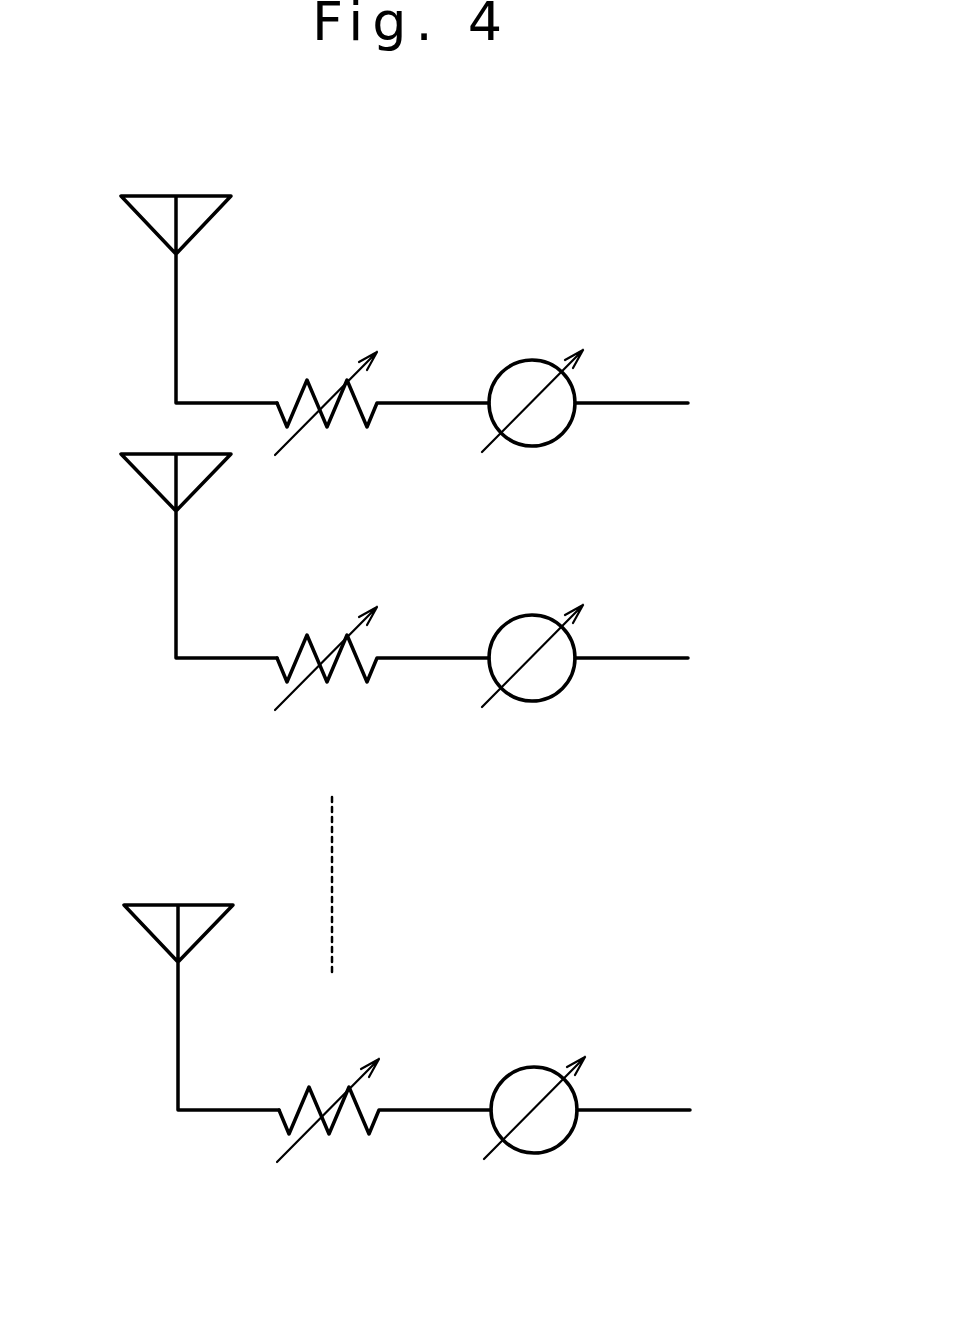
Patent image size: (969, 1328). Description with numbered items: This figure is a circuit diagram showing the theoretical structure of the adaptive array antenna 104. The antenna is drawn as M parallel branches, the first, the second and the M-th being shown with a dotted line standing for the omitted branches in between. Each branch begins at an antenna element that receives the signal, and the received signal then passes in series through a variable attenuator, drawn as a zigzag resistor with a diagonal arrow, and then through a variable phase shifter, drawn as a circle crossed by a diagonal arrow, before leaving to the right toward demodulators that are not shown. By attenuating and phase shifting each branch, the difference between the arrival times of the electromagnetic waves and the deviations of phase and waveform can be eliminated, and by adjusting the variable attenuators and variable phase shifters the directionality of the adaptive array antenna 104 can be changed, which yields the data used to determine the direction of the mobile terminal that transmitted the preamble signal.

The adaptive array antenna 104 is at (557, 270).